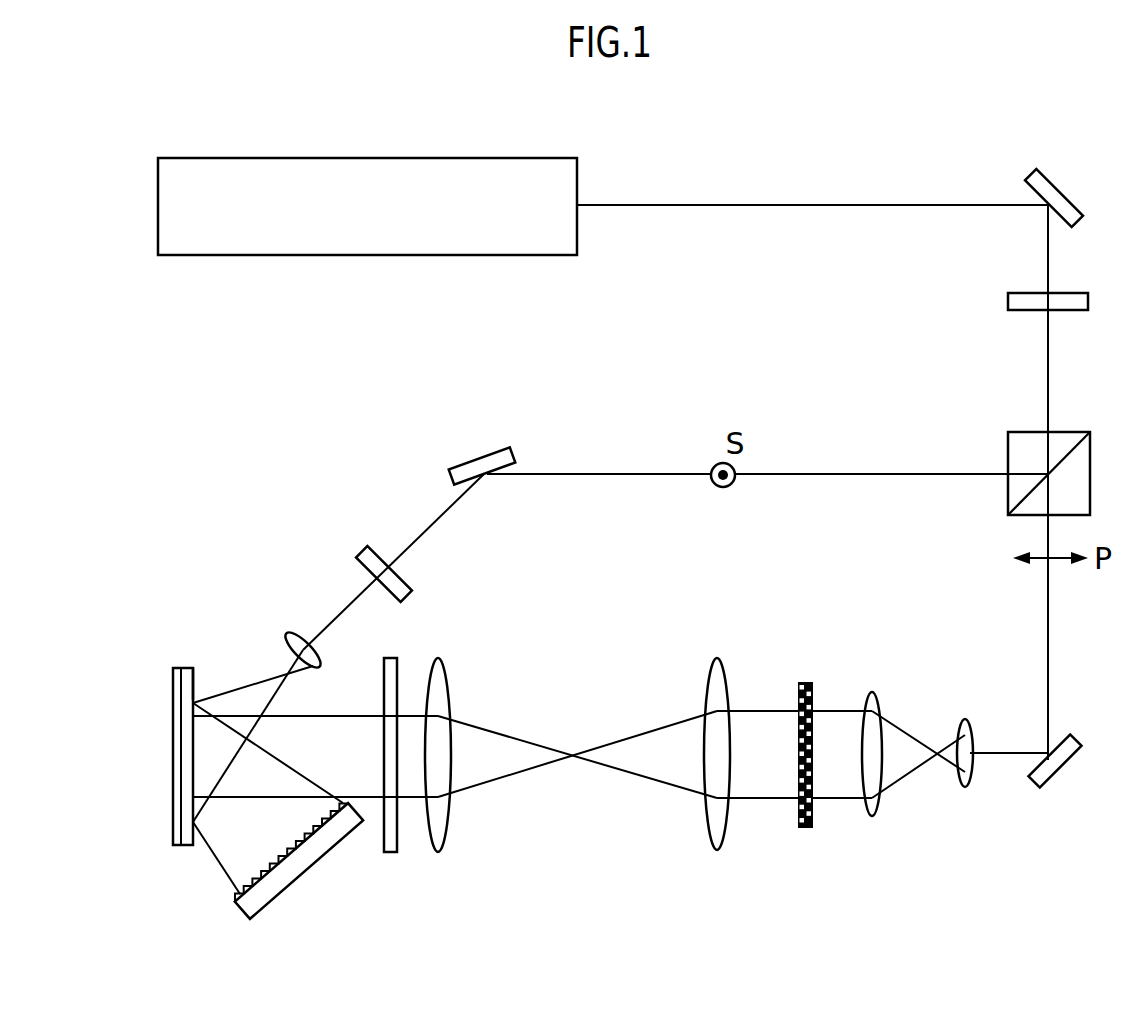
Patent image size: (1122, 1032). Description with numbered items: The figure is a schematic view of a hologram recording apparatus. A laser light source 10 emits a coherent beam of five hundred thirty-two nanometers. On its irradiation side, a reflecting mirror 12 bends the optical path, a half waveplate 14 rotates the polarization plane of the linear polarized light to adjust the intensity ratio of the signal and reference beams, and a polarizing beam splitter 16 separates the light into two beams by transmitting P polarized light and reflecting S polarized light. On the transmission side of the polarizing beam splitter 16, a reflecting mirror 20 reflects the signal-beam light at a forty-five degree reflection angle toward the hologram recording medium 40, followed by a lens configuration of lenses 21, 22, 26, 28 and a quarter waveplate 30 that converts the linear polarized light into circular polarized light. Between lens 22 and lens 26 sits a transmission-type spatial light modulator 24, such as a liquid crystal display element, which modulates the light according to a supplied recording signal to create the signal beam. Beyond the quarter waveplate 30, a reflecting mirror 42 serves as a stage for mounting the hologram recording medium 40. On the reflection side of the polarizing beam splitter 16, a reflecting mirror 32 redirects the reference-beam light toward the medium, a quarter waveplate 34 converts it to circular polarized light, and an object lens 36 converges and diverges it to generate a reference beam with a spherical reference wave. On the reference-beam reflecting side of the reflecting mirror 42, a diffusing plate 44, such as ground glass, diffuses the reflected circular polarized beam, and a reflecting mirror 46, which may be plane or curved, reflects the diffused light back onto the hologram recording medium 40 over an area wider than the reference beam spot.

The laser light source 10 is at (383, 158).
The reflecting mirror 12 is at (1058, 188).
The half waveplate 14 is at (1013, 292).
The polarizing beam splitter 16 is at (1084, 432).
The reflecting mirror 20 is at (1061, 772).
The lens 21 is at (964, 720).
The lens 22 is at (871, 692).
The spatial light modulator 24 is at (804, 682).
The lens 26 is at (717, 658).
The lens 28 is at (452, 690).
The quarter waveplate 30 is at (389, 658).
The reflecting mirror 32 is at (481, 457).
The quarter waveplate 34 is at (409, 575).
The object lens 36 is at (316, 668).
The hologram recording medium 40 is at (196, 670).
The reflecting mirror 42 is at (172, 752).
The diffusing plate 44 is at (267, 876).
The reflecting mirror 46 is at (319, 860).